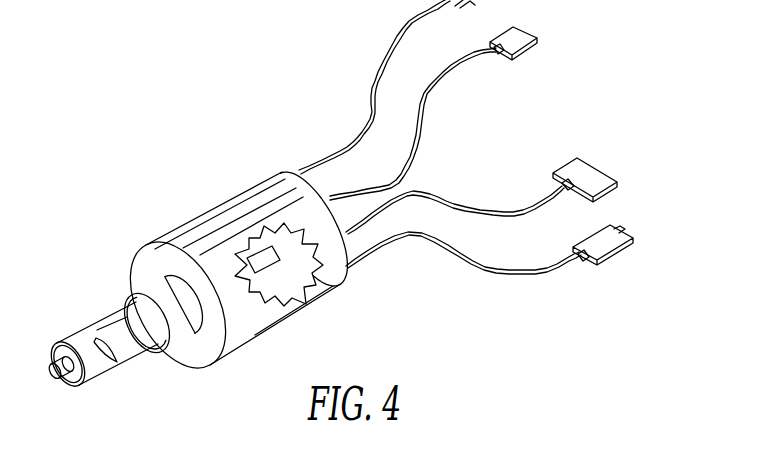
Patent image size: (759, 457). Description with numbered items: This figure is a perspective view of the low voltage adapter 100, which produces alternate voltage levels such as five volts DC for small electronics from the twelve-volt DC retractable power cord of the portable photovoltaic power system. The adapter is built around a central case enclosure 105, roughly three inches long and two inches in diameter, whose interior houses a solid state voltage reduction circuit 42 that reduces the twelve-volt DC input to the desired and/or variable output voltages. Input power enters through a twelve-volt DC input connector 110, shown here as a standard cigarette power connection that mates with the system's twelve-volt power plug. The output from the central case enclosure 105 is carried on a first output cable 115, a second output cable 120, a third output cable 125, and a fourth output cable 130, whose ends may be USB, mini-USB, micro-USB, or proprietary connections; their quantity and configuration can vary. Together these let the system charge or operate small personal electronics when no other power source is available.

The low voltage adapter 100 is at (323, 223).
The central case enclosure 105 is at (247, 188).
The 12-VDC input connector 110 is at (87, 325).
The solid state voltage reduction circuit 42 is at (310, 267).
The first output cable 115 is at (405, 28).
The second output cable 120 is at (440, 87).
The third output cable 125 is at (462, 203).
The fourth output cable 130 is at (483, 273).